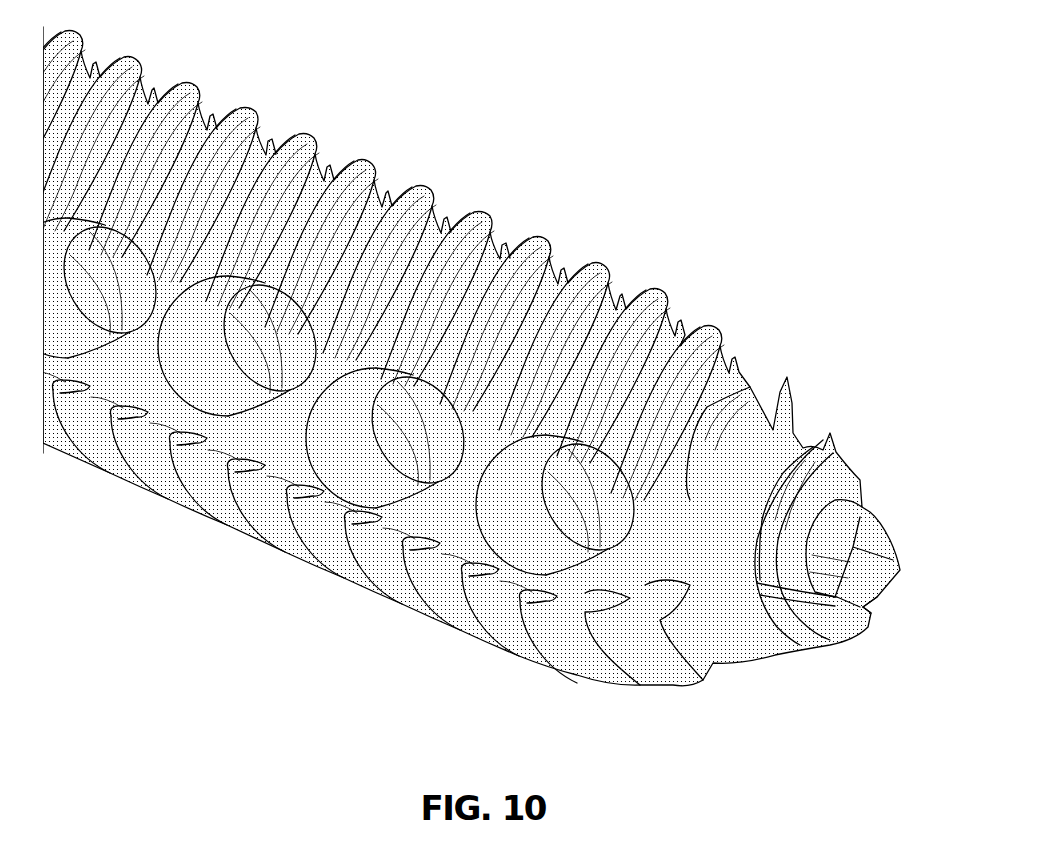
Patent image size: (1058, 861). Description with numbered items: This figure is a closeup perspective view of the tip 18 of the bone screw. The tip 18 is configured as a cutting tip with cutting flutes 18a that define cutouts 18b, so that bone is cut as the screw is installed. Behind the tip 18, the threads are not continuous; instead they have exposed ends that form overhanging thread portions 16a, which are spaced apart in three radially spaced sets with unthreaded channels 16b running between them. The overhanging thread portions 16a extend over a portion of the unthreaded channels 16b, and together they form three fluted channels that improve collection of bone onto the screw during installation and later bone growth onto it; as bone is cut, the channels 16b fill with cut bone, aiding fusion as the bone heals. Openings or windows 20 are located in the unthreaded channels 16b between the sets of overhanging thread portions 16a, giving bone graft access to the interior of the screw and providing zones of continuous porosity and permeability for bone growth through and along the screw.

The overhanging thread portions 16a is at (316, 142).
The unthreaded channels 16b is at (658, 343).
The tip 18 is at (885, 488).
The cutting flutes 18a is at (797, 620).
The cutouts 18b is at (874, 612).
The windows 20 is at (417, 420).